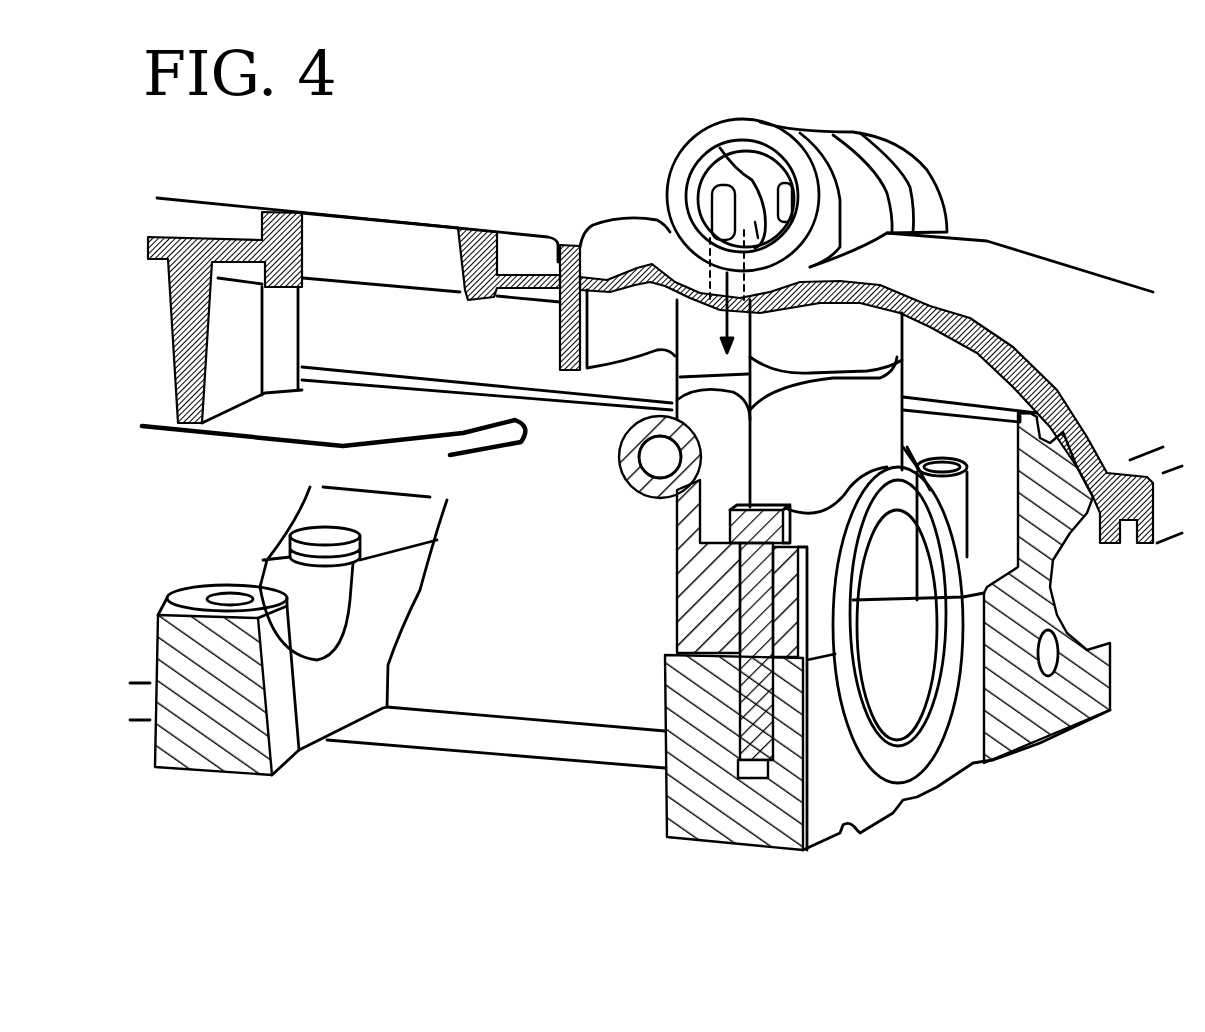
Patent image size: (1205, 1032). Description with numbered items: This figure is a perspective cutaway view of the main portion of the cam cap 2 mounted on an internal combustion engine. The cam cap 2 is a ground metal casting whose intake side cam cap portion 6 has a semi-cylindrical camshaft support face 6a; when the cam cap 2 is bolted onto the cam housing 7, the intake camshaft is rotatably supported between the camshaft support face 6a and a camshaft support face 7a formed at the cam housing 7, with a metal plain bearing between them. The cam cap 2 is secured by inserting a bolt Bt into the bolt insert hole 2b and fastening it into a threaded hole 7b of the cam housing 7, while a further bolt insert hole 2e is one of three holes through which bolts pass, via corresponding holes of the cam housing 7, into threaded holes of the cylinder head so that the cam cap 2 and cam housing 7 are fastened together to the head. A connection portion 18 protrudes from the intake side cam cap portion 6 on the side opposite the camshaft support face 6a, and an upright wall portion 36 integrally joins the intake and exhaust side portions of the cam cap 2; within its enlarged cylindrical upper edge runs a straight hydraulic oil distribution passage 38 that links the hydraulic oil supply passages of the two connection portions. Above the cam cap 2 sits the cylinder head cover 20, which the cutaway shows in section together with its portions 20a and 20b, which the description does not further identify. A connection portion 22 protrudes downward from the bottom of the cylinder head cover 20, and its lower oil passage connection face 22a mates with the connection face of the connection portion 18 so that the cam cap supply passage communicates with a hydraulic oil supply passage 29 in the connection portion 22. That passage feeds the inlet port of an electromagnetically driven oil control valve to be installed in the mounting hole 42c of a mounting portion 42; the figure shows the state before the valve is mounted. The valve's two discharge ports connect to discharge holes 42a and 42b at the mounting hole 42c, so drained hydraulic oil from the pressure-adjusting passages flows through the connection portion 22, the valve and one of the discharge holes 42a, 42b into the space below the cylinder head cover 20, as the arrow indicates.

The cam cap 2 is at (677, 598).
The bolt insert hole 2b is at (742, 570).
The bolt insert hole 2e is at (930, 453).
The intake side cam cap portion 6 is at (923, 523).
The camshaft support face 6a is at (900, 560).
The cam housing 7 is at (945, 757).
The camshaft support face 7a is at (893, 718).
The threaded hole 7b is at (742, 773).
The connection portion 18 is at (890, 427).
The cylinder head cover 20 is at (1075, 277).
The cover flange 20a is at (230, 440).
The cover recess 20b is at (375, 322).
The connection portion 22 is at (897, 333).
The oil passage connection face 22a is at (877, 380).
The hydraulic oil supply passage 29 is at (721, 148).
The wall portion 36 is at (732, 450).
The hydraulic oil distribution passage 38 is at (656, 457).
The mounting portion 42 is at (870, 190).
The discharge hole 42a is at (708, 188).
The discharge hole 42b is at (783, 183).
The mounting hole 42c is at (692, 162).
The bolt Bt is at (750, 633).